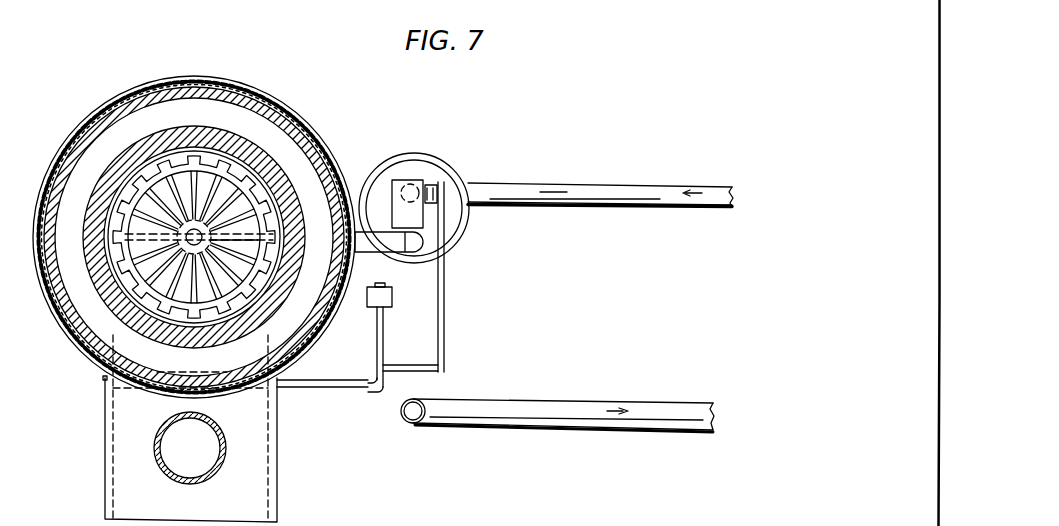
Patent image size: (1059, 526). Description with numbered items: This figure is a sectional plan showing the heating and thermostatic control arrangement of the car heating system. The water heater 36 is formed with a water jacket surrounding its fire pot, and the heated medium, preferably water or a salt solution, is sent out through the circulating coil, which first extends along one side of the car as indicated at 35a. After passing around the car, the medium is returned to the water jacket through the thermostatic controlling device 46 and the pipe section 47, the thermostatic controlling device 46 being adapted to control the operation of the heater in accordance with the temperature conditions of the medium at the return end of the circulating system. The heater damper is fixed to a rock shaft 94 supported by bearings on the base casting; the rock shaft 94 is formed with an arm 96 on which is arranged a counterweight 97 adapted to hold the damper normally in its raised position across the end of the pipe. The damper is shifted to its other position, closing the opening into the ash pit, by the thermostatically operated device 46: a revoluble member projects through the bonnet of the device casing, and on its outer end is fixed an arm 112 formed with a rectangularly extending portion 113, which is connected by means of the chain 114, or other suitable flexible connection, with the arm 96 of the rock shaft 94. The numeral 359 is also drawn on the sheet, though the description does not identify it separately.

The water heater 36 is at (289, 106).
The pipe section 47 is at (368, 231).
The thermostatic controlling device 46 is at (430, 177).
The supply pipe 359 is at (608, 192).
The arm 112 is at (443, 269).
The counterweight 97 is at (393, 294).
The arm 96 is at (377, 333).
The rectangularly extending portion 113 is at (405, 369).
The chain 114 is at (378, 385).
The rock shaft 94 is at (323, 387).
The circulating coil portion 35a is at (538, 410).